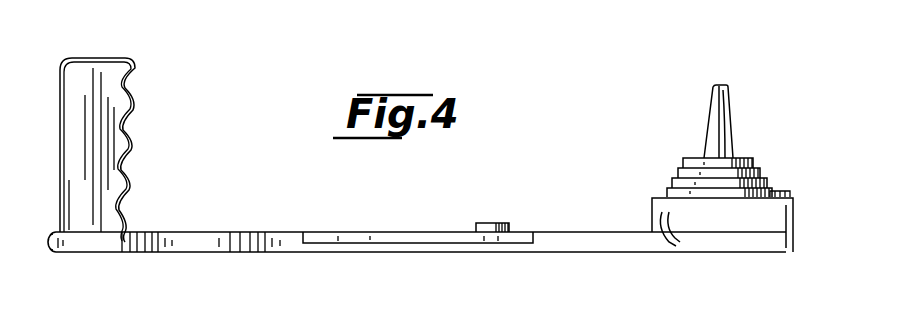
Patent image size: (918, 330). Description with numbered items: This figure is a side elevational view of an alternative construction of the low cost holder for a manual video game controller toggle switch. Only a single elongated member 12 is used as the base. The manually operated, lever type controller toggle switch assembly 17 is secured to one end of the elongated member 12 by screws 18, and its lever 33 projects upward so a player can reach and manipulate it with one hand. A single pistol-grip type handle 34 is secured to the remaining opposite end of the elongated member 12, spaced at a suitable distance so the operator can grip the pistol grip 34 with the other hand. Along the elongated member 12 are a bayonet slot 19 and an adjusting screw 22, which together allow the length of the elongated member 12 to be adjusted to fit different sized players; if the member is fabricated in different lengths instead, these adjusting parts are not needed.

The elongated member 12 is at (218, 232).
The controller toggle switch assembly 17 is at (767, 181).
The screws 18 is at (660, 197).
The bayonet slot 19 is at (360, 233).
The adjusting screw 22 is at (499, 224).
The lever 33 is at (717, 122).
The pistol-grip type handle 34 is at (93, 74).